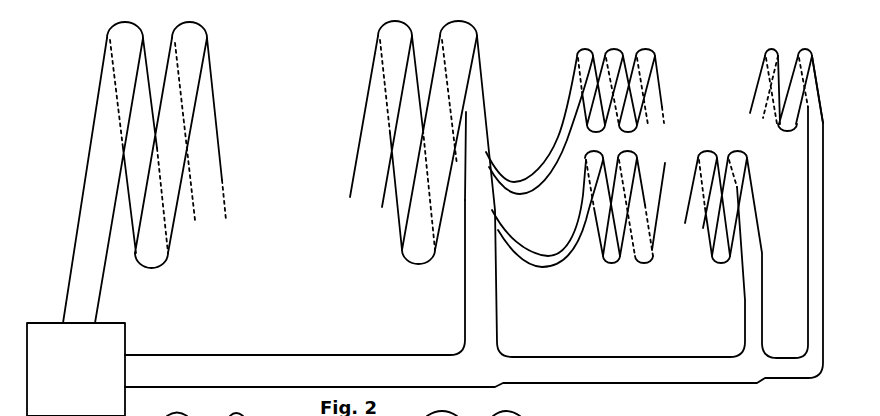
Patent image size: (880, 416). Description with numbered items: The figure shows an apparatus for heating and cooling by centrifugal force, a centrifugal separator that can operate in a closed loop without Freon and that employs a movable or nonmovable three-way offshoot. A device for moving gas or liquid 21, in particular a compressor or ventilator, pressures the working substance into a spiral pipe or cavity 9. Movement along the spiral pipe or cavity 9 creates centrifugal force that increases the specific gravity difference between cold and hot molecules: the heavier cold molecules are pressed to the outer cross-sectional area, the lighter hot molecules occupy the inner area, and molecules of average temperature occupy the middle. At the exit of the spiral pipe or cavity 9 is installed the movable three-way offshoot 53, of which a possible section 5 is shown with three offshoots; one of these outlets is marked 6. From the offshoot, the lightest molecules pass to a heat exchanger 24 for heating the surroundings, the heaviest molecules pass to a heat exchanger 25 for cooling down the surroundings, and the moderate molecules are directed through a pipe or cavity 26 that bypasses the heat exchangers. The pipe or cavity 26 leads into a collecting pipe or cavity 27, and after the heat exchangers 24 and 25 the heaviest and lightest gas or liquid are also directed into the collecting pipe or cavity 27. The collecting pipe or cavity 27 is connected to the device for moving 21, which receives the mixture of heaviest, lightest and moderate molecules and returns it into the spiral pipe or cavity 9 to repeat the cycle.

The section 5 is at (478, 130).
The tube 6 is at (474, 163).
The spiral pipe or cavity 9 is at (172, 172).
The device for moving gas or liquid 21 is at (76, 369).
The heat exchanger for heating surroundings 24 is at (599, 121).
The heat exchanger for cooling down surroundings 25 is at (650, 232).
The pipe or cavity for gas or liquid with intermediate temperature 26 is at (597, 196).
The collecting pipe or cavity 27 is at (474, 221).
The 3-way offshoot 53 is at (468, 157).